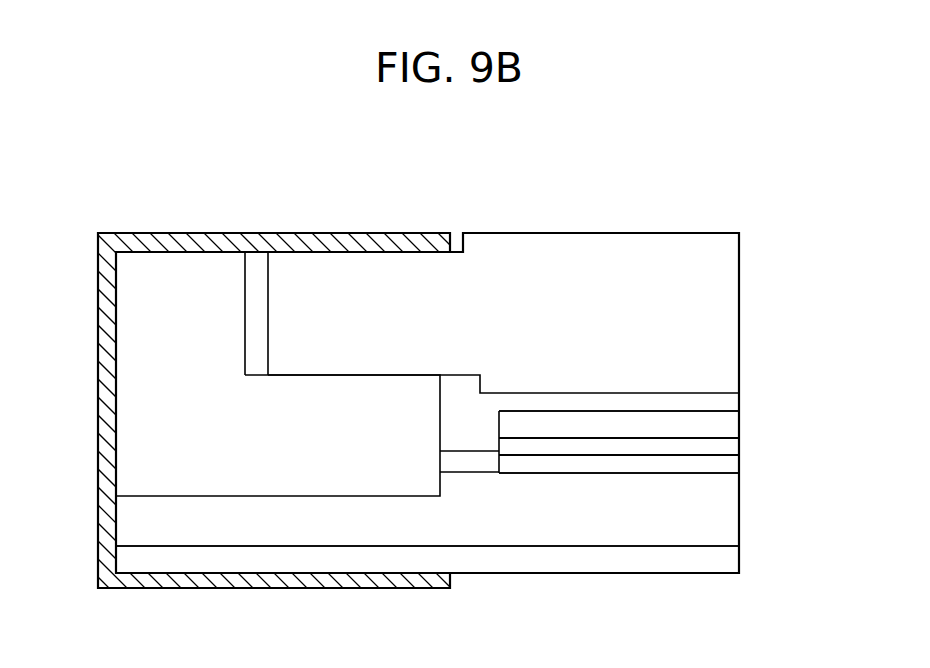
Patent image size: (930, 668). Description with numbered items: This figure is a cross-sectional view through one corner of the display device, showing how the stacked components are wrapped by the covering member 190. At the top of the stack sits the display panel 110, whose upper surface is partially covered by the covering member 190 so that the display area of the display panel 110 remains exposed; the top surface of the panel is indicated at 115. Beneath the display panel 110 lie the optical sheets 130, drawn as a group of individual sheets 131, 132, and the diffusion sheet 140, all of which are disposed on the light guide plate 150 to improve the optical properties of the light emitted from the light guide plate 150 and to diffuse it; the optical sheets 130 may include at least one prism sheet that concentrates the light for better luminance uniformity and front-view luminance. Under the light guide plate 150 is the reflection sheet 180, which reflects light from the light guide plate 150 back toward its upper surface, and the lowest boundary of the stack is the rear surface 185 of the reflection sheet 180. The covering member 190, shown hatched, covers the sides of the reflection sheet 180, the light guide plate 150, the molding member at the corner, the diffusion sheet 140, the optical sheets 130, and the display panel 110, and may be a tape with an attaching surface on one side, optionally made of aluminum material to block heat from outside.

The display panel 110 is at (730, 301).
The top surface of substrate 115 is at (575, 233).
The optical sheets 130 is at (795, 412).
The first layer 131 is at (744, 423).
The second layer 132 is at (744, 448).
The diffusion sheet 140 is at (744, 469).
The light guide plate 150 is at (730, 510).
The reflection sheet 180 is at (730, 562).
The rear surface 185 is at (600, 573).
The covering member 190 is at (101, 441).